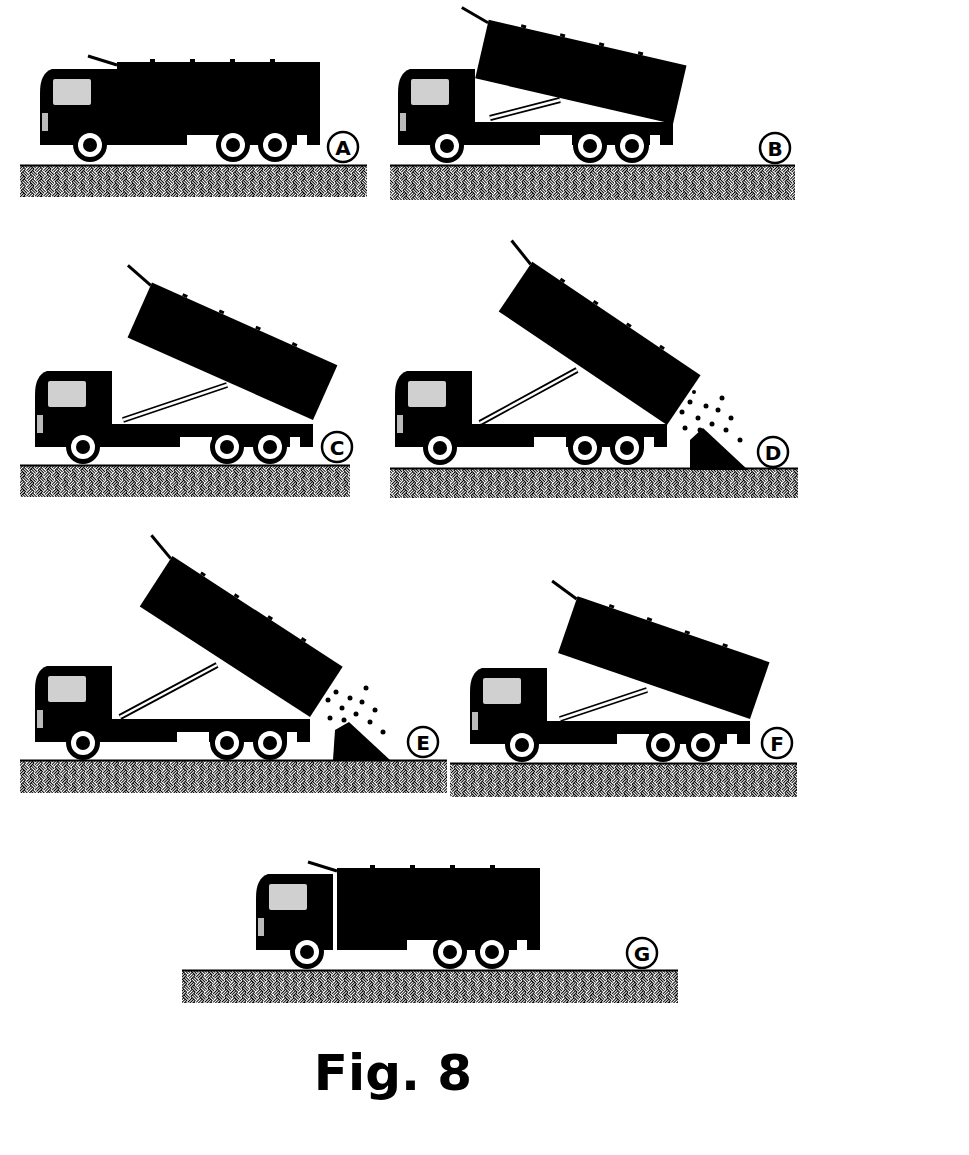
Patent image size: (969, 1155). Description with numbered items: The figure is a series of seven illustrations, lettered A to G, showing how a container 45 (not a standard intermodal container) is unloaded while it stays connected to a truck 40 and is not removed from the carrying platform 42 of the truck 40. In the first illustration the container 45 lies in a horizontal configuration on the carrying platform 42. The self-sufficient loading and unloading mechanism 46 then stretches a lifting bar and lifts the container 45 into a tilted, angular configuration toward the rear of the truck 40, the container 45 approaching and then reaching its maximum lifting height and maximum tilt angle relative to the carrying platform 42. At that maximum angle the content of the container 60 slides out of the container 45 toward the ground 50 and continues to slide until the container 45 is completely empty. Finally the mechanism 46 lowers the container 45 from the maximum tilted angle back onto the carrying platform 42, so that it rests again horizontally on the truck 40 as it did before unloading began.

The truck 40 is at (63, 72).
The carrying platform 42 is at (183, 440).
The container 45 is at (252, 63).
The self-sufficient loading and unloading mechanism 46 is at (517, 153).
The ground 50 is at (637, 190).
The content of the container 60 is at (727, 428).